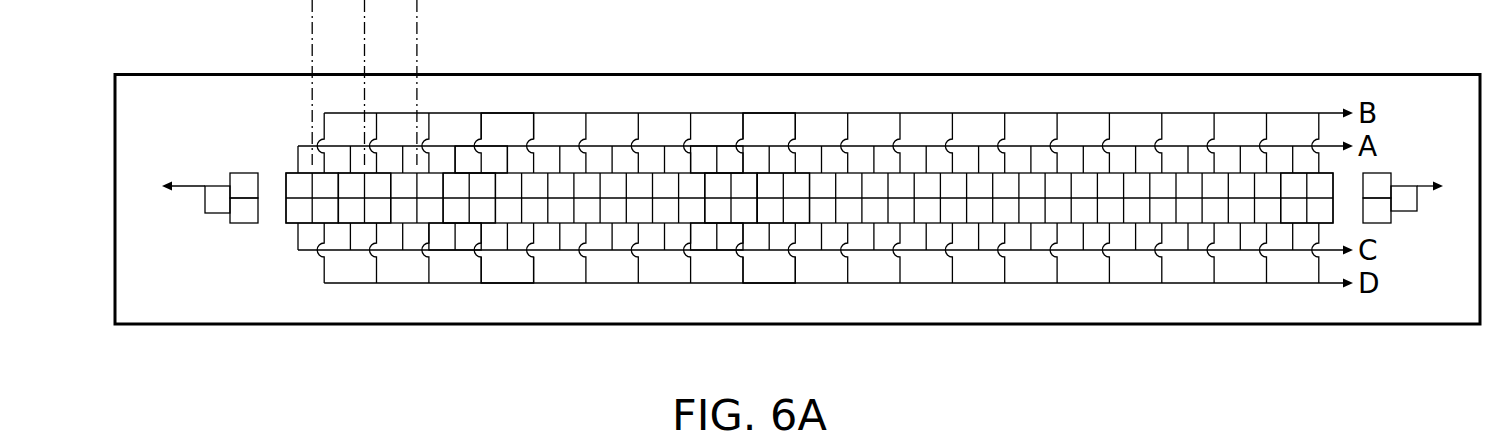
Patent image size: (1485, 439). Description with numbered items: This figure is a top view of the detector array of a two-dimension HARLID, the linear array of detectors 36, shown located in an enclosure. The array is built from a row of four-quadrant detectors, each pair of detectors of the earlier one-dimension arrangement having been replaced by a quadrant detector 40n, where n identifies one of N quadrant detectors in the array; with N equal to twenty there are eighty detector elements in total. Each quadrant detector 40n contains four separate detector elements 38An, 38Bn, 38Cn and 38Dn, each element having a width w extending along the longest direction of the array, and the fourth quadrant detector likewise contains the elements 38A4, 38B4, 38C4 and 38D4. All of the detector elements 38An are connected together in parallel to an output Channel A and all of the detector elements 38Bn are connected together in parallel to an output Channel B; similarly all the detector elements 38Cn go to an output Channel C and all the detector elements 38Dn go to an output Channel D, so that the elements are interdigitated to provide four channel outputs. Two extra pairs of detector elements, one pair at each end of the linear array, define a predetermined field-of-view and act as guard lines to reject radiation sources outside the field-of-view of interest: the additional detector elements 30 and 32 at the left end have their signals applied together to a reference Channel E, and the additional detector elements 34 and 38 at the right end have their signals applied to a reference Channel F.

The additional detector element 30 is at (243, 173).
The additional detector element 32 is at (248, 216).
The additional detector element 34 is at (1380, 177).
The linear array of detectors 36 is at (1237, 328).
The additional detector element 38 is at (1380, 213).
The quadrant detector 40n is at (743, 187).
The detector element 38A4 is at (462, 172).
The detector element 38B4 is at (485, 182).
The detector element 38An is at (722, 187).
The detector element 38Bn is at (790, 143).
The detector element 38C4 is at (450, 215).
The detector element 38D4 is at (485, 212).
The detector element 38Cn is at (713, 212).
The detector element 38Dn is at (747, 212).